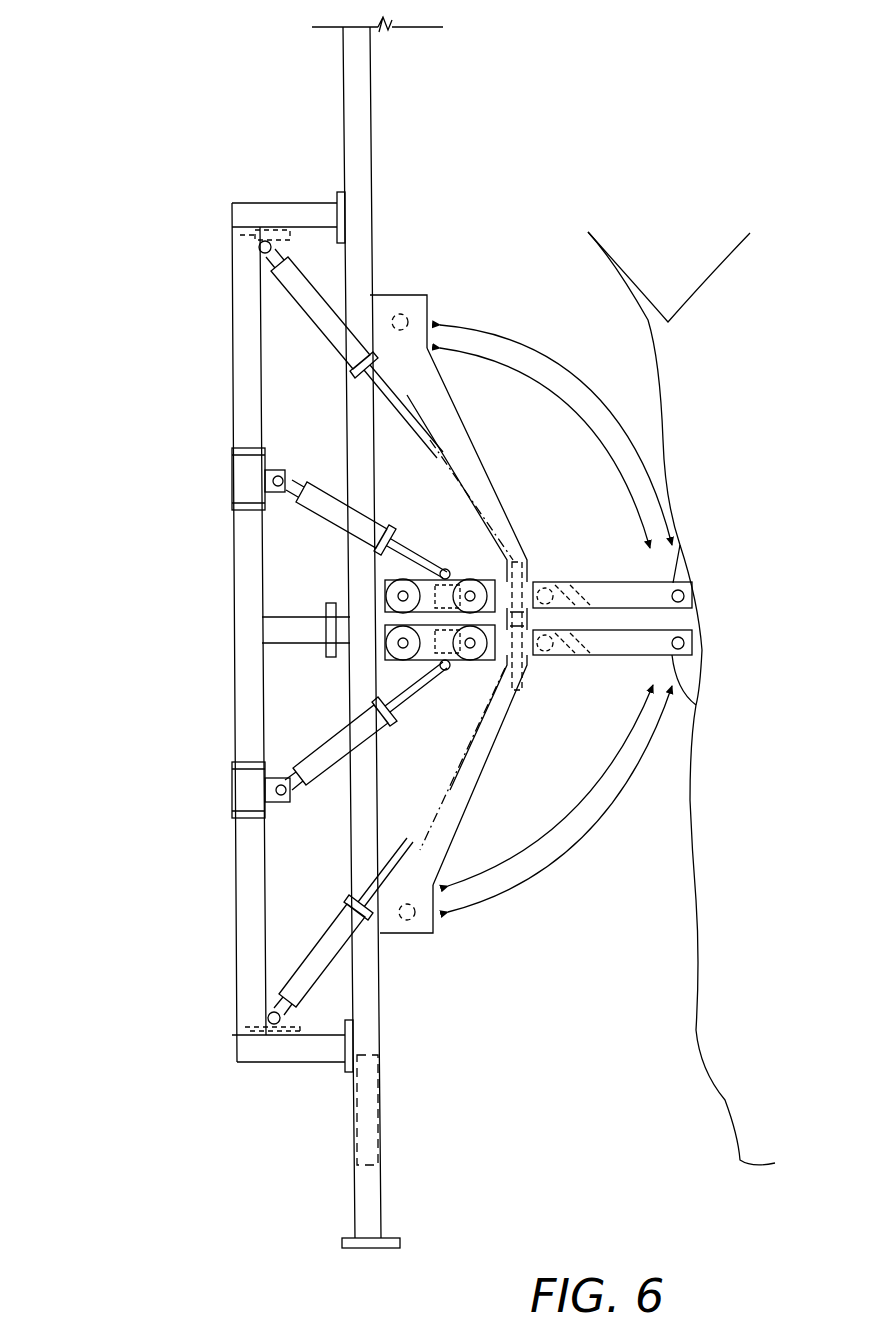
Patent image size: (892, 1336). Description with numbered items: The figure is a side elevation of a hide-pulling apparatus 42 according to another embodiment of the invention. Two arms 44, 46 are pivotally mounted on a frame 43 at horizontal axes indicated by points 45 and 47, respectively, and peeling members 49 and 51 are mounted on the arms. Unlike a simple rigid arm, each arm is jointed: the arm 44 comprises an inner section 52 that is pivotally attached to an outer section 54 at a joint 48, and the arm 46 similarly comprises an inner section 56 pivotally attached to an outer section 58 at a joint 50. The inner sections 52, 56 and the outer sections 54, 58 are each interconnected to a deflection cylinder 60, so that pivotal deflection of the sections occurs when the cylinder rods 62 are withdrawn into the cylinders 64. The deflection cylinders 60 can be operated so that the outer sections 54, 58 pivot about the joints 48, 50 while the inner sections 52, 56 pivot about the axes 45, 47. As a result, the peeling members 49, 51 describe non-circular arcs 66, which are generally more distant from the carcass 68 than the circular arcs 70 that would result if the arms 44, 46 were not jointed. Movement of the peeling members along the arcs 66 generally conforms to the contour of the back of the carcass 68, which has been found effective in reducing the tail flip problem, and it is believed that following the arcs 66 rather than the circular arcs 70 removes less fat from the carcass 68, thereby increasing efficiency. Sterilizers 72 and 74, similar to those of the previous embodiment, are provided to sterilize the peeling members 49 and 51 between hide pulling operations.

The apparatus 42 is at (155, 606).
The frame 43 is at (355, 858).
The arm 44 is at (565, 555).
The horizontal axis 45 is at (395, 596).
The arm 46 is at (582, 672).
The horizontal axis 47 is at (395, 642).
The joint 48 is at (478, 580).
The peeling member 49 is at (686, 596).
The joint 50 is at (475, 660).
The peeling member 51 is at (688, 641).
The inner section 52 is at (450, 560).
The outer section 54 is at (640, 582).
The inner section 56 is at (420, 690).
The outer section 58 is at (632, 656).
The deflection cylinder 60 is at (333, 368).
The cylinder rod 62 is at (430, 455).
The cylinder 64 is at (320, 330).
The non-circular arc 66 is at (588, 440).
The carcass 68 is at (670, 361).
The circular arc 70 is at (500, 338).
The sterilizer 72 is at (427, 295).
The sterilizer 74 is at (432, 936).